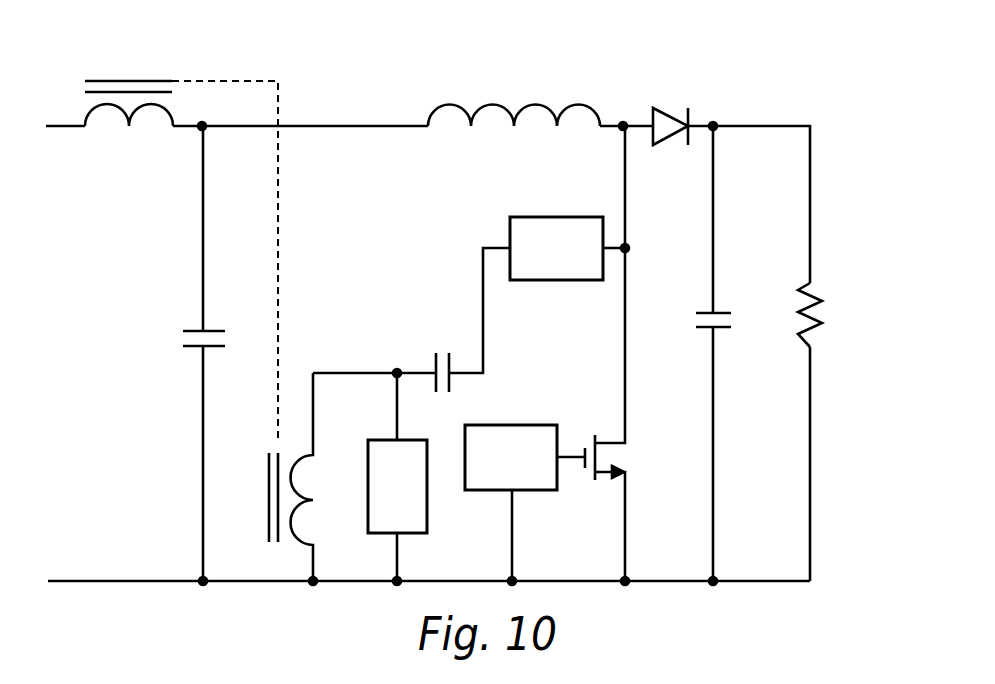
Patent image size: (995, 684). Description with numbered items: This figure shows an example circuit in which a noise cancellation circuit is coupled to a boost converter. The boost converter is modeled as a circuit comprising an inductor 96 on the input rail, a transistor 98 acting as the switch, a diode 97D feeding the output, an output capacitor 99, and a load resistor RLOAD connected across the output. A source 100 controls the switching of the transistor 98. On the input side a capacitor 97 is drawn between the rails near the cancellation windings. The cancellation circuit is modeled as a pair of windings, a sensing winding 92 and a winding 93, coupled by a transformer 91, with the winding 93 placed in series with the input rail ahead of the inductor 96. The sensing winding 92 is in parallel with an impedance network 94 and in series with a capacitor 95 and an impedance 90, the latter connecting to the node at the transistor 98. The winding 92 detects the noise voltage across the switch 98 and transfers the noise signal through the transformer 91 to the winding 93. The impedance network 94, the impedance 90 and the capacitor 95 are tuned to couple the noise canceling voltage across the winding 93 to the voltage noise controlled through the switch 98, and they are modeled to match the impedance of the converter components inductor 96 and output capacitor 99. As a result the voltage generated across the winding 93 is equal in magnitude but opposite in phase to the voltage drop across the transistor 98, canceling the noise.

The winding 93 is at (127, 75).
The capacitor 97 is at (198, 328).
The transformer 91 is at (277, 543).
The sensing winding 92 is at (293, 527).
The impedance network 94 is at (427, 500).
The capacitor 95 is at (432, 360).
The impedance 90 is at (550, 213).
The source 100 is at (522, 425).
The transistor 98 is at (627, 457).
The inductor 96 is at (500, 105).
The diode 97D is at (670, 108).
The output capacitor 99 is at (725, 330).
The resistor RLOAD is at (820, 325).